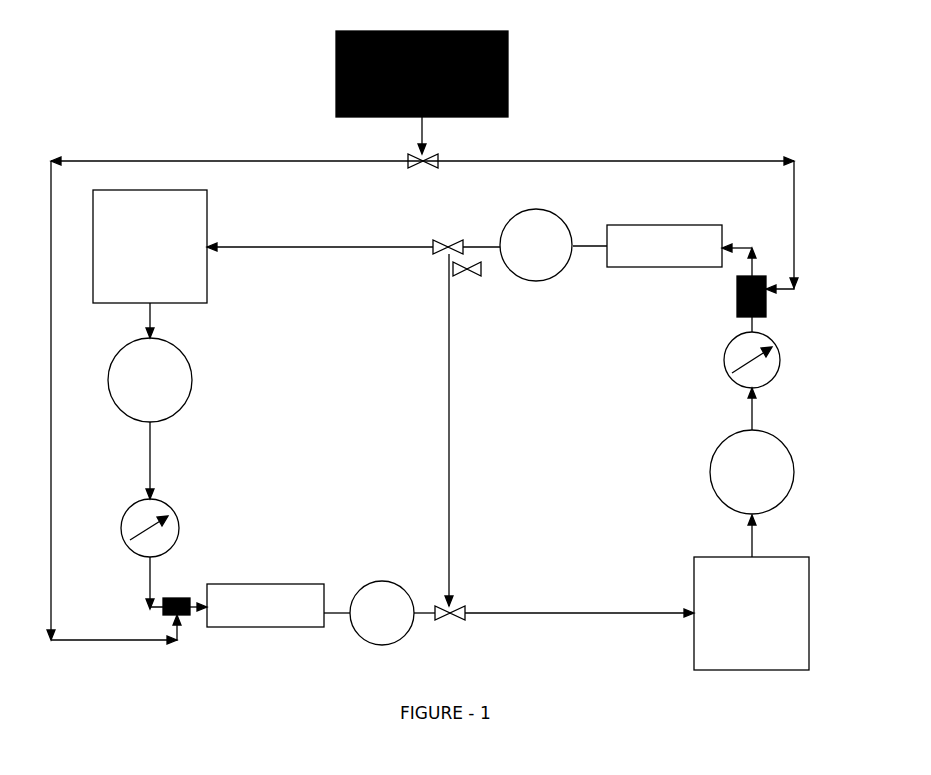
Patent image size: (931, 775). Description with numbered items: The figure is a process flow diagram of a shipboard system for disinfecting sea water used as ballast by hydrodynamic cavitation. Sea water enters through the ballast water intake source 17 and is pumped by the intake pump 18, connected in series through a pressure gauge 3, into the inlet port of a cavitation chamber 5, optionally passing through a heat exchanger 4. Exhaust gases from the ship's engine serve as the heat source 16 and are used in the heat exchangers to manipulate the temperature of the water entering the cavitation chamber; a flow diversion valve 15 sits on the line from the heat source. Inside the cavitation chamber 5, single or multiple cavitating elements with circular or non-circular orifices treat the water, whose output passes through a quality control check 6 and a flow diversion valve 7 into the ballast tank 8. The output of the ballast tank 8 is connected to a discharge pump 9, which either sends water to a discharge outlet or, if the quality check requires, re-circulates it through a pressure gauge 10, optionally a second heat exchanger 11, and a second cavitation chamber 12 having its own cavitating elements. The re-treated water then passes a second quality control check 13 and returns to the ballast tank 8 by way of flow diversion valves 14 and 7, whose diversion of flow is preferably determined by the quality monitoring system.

The pressure gauge 3 is at (141, 554).
The heat exchanger 4 is at (185, 606).
The cavitation chamber 5 is at (278, 605).
The quality control check 6 is at (392, 613).
The flow diversion valve 7 is at (564, 630).
The ballast tank 8 is at (751, 592).
The discharge pump 9 is at (752, 451).
The pressure gauge 10 is at (739, 352).
The heat exchanger 11 is at (741, 280).
The cavitation chamber 12 is at (647, 246).
The quality control check 13 is at (517, 245).
The flow diversion valve 14 is at (443, 265).
The flow diversion valve 15 is at (425, 167).
The heat source 16 is at (422, 92).
The ballast water intake source 17 is at (263, 264).
The intake pump 18 is at (150, 418).